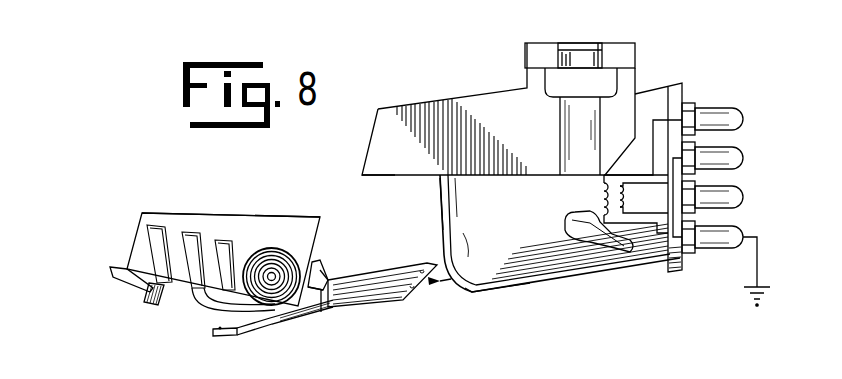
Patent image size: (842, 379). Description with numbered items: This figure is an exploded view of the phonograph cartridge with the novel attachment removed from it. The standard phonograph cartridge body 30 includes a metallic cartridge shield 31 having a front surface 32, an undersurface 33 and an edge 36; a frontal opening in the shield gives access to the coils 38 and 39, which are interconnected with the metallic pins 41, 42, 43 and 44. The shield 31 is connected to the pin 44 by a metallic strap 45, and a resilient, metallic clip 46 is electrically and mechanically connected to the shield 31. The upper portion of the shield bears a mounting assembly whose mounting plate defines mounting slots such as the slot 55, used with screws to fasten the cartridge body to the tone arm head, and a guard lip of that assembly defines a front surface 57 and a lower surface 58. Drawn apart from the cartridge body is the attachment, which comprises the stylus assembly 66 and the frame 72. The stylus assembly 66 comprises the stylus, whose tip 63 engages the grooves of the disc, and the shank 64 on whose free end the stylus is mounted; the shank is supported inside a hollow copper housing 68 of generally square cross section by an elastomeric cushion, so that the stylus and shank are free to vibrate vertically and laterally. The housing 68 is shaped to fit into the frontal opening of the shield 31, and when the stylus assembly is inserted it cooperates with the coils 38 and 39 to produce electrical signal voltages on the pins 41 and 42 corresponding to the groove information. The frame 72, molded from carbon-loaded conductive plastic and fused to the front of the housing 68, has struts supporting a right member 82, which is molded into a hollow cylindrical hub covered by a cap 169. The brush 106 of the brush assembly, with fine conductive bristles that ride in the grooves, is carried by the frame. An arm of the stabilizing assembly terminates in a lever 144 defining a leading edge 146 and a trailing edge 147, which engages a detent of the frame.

The phonograph cartridge body 30 is at (596, 274).
The cartridge shield 31 is at (657, 274).
The front surface 32 is at (441, 202).
The undersurface 33 is at (567, 284).
The edge 36 is at (676, 84).
The coil 38 is at (600, 189).
The coil 39 is at (627, 196).
The metallic pin 41 is at (741, 117).
The metallic pin 42 is at (742, 159).
The metallic pin 43 is at (742, 197).
The metallic pin 44 is at (745, 236).
The metallic strap 45 is at (691, 253).
The resilient metallic clip 46 is at (563, 219).
The mounting slot 55 is at (596, 43).
The front surface of guard lip 57 is at (370, 138).
The lower surface of guard lip 58 is at (382, 178).
The stylus tip 63 is at (222, 336).
The shank 64 is at (259, 325).
The stylus assembly 66 is at (379, 271).
The copper housing 68 is at (349, 307).
The frame 72 is at (138, 229).
The right member 82 is at (227, 212).
The brush 106 is at (145, 303).
The lever 144 is at (327, 268).
The leading edge 146 is at (322, 261).
The trailing edge 147 is at (321, 298).
The cap 169 is at (273, 248).